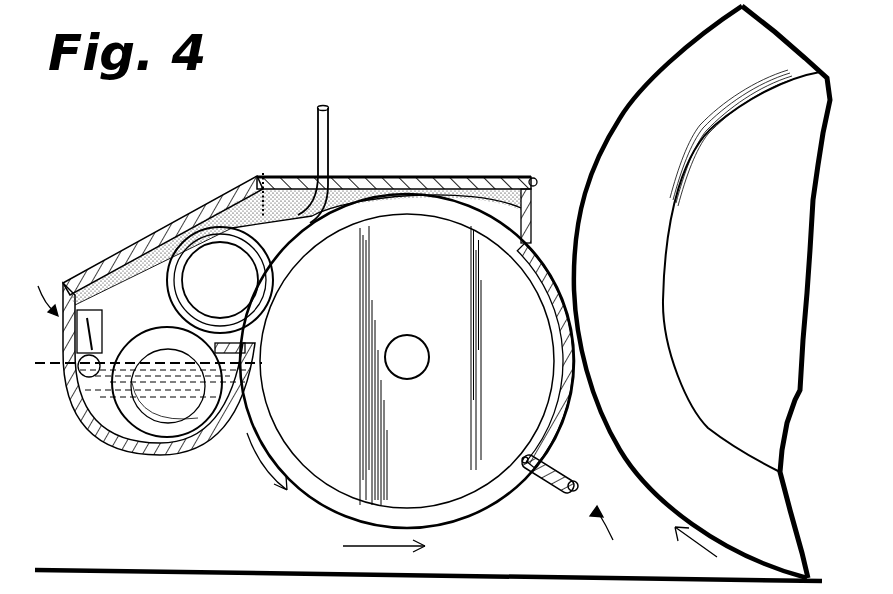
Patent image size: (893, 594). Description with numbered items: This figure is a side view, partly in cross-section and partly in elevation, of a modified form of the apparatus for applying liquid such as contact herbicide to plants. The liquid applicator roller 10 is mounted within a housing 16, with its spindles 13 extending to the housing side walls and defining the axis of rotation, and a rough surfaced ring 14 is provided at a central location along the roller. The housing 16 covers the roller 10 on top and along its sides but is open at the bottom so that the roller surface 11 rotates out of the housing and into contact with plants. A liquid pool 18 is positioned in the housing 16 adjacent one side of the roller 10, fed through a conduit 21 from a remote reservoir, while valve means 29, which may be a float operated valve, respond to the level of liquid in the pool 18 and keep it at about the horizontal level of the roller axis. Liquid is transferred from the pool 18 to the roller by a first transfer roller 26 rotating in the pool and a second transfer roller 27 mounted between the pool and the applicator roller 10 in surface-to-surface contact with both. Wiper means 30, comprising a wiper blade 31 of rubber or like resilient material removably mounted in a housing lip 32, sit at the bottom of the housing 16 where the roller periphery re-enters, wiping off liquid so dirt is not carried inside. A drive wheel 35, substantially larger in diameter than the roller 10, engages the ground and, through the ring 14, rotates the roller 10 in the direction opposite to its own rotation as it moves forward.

The liquid applicator roller 10 is at (230, 497).
The roller surface 11 is at (453, 503).
The spindles 13 is at (422, 375).
The rough surfaced ring 14 is at (326, 510).
The housing 16 is at (528, 178).
The liquid pool 18 is at (222, 390).
The conduit 21 is at (238, 192).
The first transfer roller 26 is at (260, 362).
The second transfer roller 27 is at (252, 287).
The valve means 29 is at (140, 315).
The wiper means 30 is at (595, 529).
The wiper blade 31 is at (576, 487).
The housing lip 32 is at (552, 493).
The drive wheel 35 is at (628, 108).